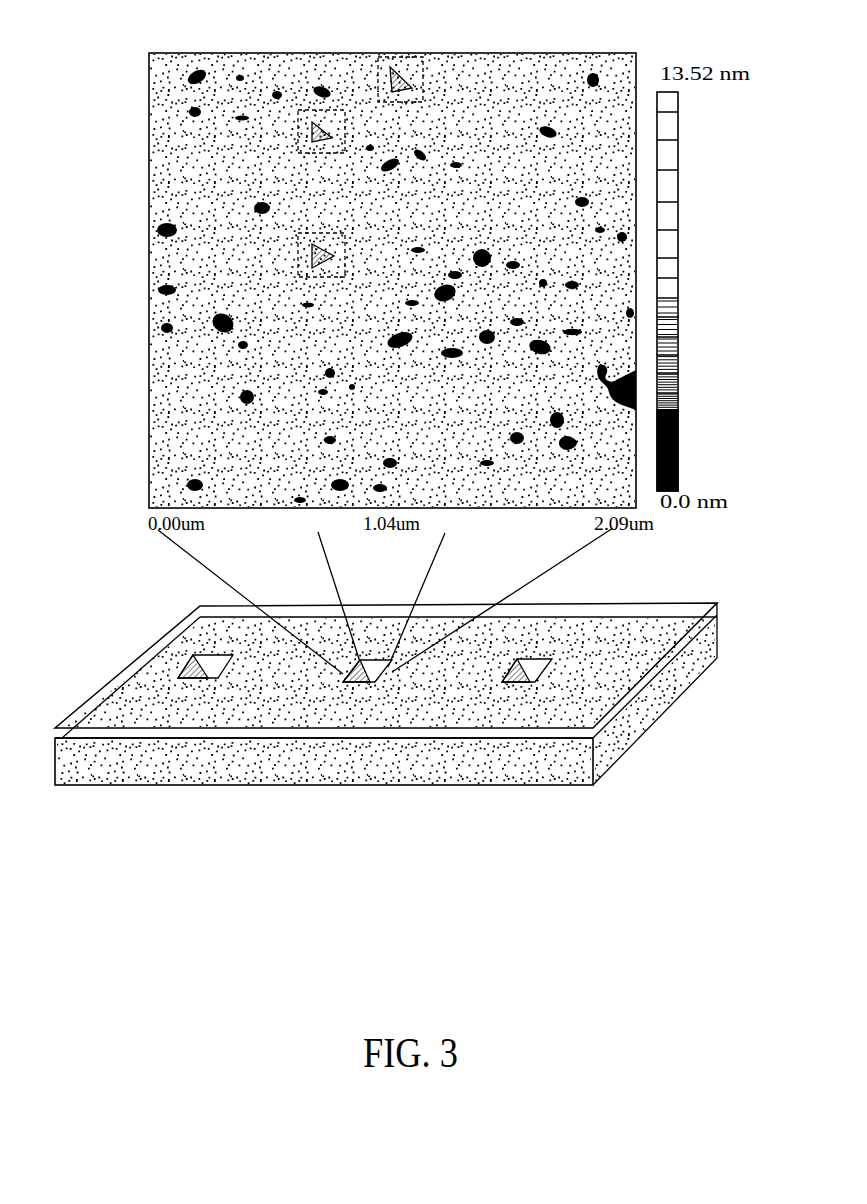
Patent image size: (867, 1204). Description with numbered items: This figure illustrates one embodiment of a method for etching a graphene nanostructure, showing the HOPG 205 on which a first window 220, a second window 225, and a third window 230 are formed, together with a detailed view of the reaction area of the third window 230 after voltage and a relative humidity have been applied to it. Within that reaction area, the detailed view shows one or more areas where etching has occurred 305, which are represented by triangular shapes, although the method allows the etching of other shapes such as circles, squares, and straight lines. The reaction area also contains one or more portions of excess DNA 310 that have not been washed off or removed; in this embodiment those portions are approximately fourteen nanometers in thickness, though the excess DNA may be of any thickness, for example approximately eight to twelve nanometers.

The HOPG 205 is at (243, 773).
The first window 220 is at (180, 667).
The second window 225 is at (372, 682).
The third window 230 is at (550, 661).
The areas where etching has occurred 305 is at (298, 147).
The portions of excess DNA 310 is at (625, 148).